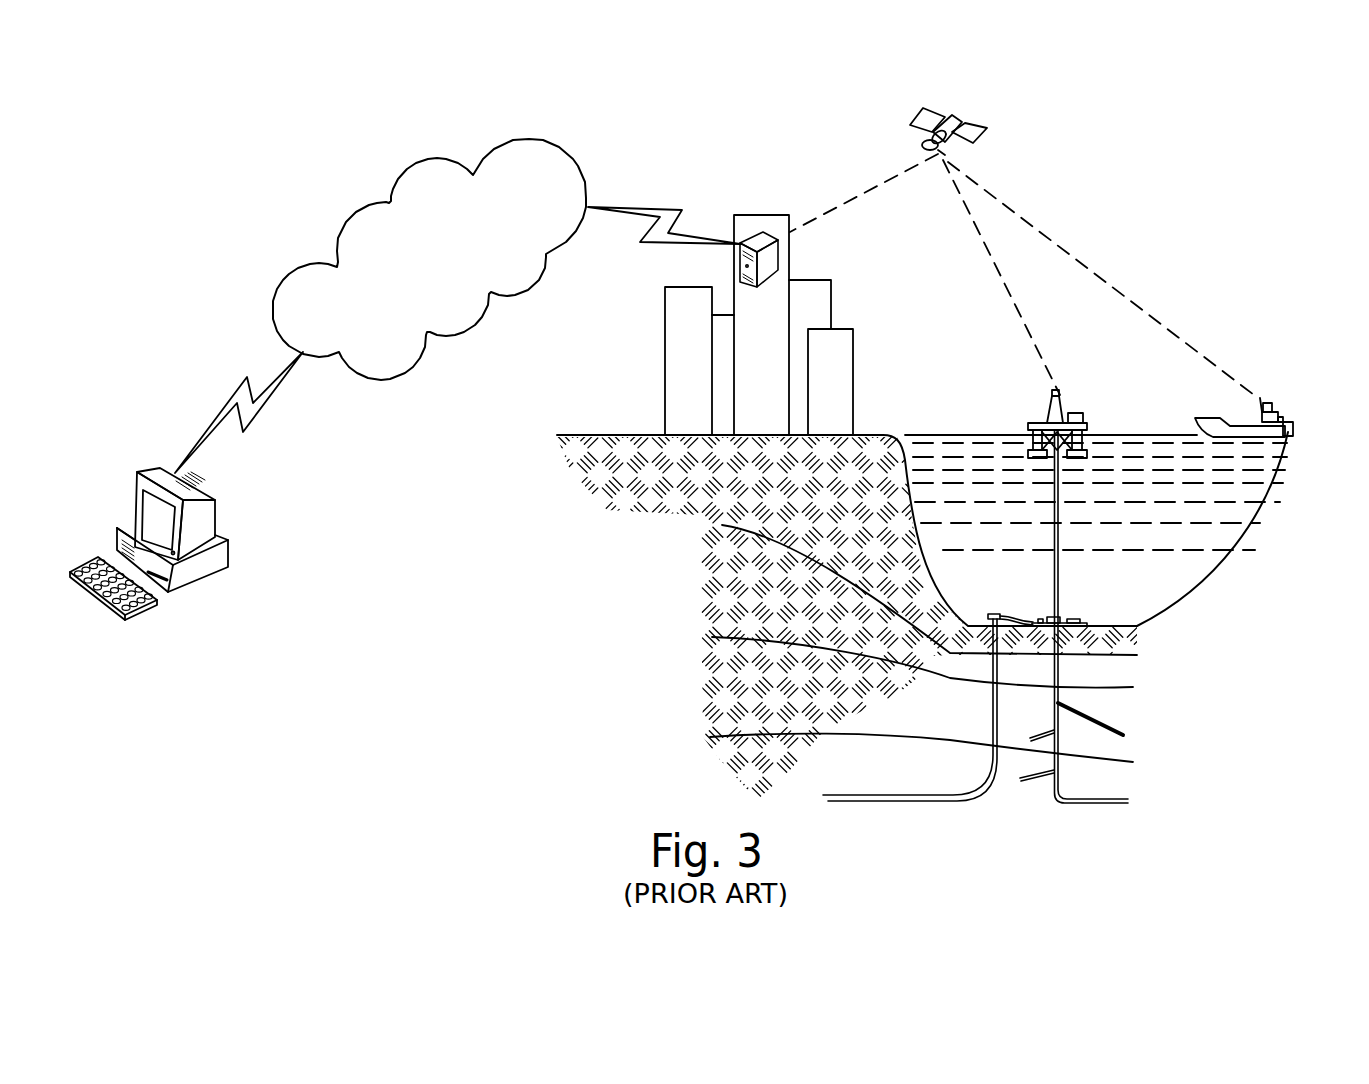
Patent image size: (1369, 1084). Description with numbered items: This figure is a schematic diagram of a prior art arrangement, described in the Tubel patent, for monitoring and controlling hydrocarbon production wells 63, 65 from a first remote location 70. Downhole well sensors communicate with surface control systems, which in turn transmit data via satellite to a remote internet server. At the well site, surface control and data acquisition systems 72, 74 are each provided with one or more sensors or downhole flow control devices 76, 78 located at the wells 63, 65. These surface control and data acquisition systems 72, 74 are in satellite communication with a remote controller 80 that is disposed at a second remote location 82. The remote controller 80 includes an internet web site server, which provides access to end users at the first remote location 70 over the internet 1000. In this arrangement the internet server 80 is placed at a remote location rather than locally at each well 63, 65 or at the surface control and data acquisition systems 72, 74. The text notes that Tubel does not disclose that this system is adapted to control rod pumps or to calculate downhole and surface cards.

The internet 1000 is at (340, 216).
The first remote location 70 is at (228, 540).
The second remote location 82 is at (745, 213).
The remote controller 80 is at (768, 232).
The surface control and data acquisition system 72 is at (1072, 415).
The surface control and data acquisition system 74 is at (1275, 412).
The hydrocarbon production well 65 is at (987, 614).
The sensor or downhole flow control device 76 is at (997, 616).
The sensor or downhole flow control device 78 is at (1072, 618).
The hydrocarbon production well 63 is at (1080, 623).